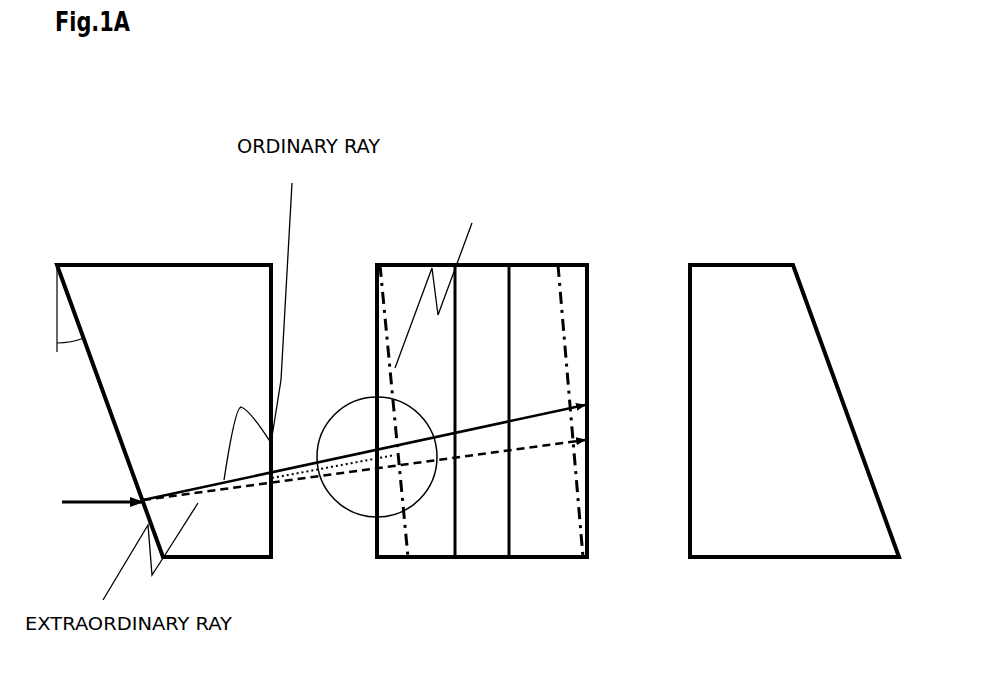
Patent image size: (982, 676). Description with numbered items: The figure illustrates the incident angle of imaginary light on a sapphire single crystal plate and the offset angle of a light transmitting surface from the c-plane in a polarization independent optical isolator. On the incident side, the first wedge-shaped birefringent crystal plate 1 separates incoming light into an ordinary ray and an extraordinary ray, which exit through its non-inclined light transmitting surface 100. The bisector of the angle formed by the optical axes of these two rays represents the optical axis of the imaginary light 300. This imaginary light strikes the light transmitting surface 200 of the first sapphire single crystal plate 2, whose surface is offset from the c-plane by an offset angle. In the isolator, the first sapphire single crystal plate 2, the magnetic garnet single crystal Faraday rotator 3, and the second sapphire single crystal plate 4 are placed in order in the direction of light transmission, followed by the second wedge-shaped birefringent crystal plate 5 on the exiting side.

The first wedge-shaped birefringent crystal plate 1 is at (164, 379).
The non-inclined light transmitting surface 100 is at (268, 317).
The light transmitting surface of the sapphire single crystal plate 200 is at (456, 409).
The optical axis of the imaginary light 300 is at (305, 476).
The first sapphire single crystal plate 2 is at (383, 557).
The magnetic garnet single crystal (Faraday rotator) 3 is at (478, 557).
The second sapphire single crystal plate 4 is at (555, 557).
The second wedge-shaped birefringent crystal plate 5 is at (782, 262).